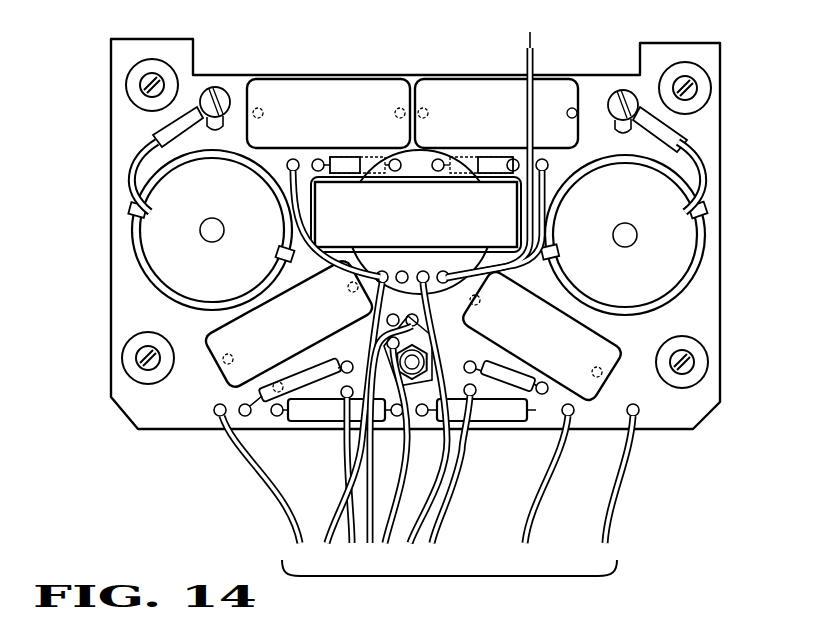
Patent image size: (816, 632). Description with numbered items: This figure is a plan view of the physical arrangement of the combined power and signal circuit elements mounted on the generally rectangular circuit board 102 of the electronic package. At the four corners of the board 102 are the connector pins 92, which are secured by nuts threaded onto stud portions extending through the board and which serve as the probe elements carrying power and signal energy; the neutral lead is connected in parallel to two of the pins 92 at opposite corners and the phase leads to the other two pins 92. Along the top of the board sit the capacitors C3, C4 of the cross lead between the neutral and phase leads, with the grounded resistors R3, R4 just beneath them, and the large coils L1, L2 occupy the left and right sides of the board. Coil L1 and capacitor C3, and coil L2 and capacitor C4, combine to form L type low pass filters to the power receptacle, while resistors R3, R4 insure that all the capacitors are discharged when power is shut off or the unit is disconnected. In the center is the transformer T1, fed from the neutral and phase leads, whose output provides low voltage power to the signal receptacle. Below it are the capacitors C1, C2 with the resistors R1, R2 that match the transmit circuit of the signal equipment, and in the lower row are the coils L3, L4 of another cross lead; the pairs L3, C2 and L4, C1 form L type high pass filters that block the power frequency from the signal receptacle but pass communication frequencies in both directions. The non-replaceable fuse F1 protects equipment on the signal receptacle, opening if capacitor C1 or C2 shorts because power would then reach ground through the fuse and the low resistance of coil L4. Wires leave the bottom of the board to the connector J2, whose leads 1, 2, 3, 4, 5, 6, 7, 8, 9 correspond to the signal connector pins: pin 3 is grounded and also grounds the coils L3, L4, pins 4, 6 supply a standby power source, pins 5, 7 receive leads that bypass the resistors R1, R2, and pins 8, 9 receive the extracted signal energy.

The connector pins 92 is at (143, 80).
The circuit board 102 is at (710, 309).
The coil L1 is at (624, 202).
The coil L2 is at (211, 198).
The inductance coil L3 is at (527, 410).
The inductance coil L4 is at (308, 410).
The capacitor C1 is at (289, 324).
The capacitor C2 is at (542, 336).
The capacitor C3 is at (496, 113).
The capacitor C4 is at (328, 113).
The transformer T1 is at (416, 222).
The resistor R1 is at (506, 366).
The resistor R2 is at (336, 378).
The resistor R3 is at (490, 165).
The resistor R4 is at (344, 165).
The fuse F1 is at (316, 358).
The connector J2 is at (449, 585).
The connector lead 1 is at (388, 448).
The connector lead 2 is at (425, 426).
The pin 3 is at (393, 459).
The pin 4 is at (616, 493).
The pin 5 is at (543, 493).
The pin 6 is at (351, 426).
The pin 7 is at (263, 493).
The pin 8 is at (448, 483).
The pin 9 is at (352, 484).